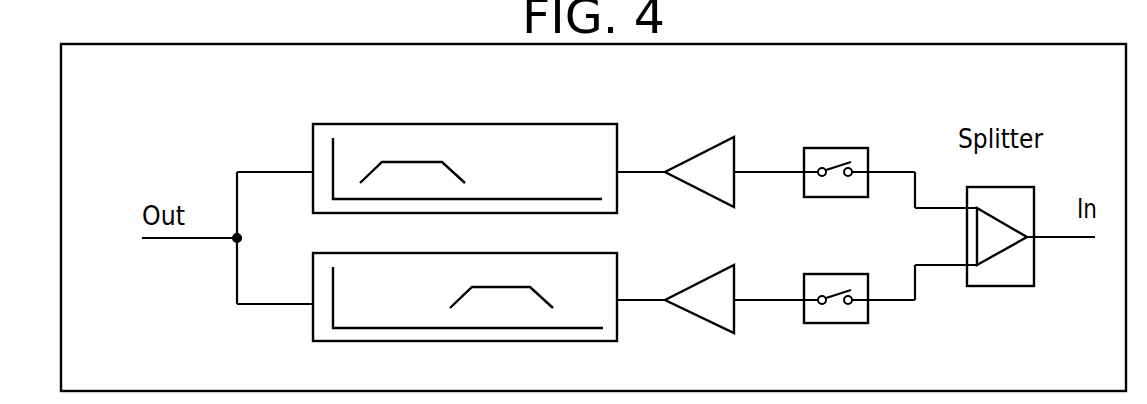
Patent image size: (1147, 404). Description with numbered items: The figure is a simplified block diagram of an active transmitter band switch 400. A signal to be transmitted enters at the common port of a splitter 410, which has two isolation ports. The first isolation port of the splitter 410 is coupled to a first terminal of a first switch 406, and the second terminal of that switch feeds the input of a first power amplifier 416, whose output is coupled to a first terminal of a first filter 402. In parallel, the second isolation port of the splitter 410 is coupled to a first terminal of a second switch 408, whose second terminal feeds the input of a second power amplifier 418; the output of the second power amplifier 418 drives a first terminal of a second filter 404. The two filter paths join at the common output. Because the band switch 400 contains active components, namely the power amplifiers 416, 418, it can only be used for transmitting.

The active transmitter band switch 400 is at (170, 94).
The first filter 402 is at (537, 123).
The second filter 404 is at (340, 342).
The first switch 406 is at (847, 148).
The second switch 408 is at (872, 323).
The splitter 410 is at (1033, 286).
The first power amplifier 416 is at (715, 145).
The second power amplifier 418 is at (735, 333).